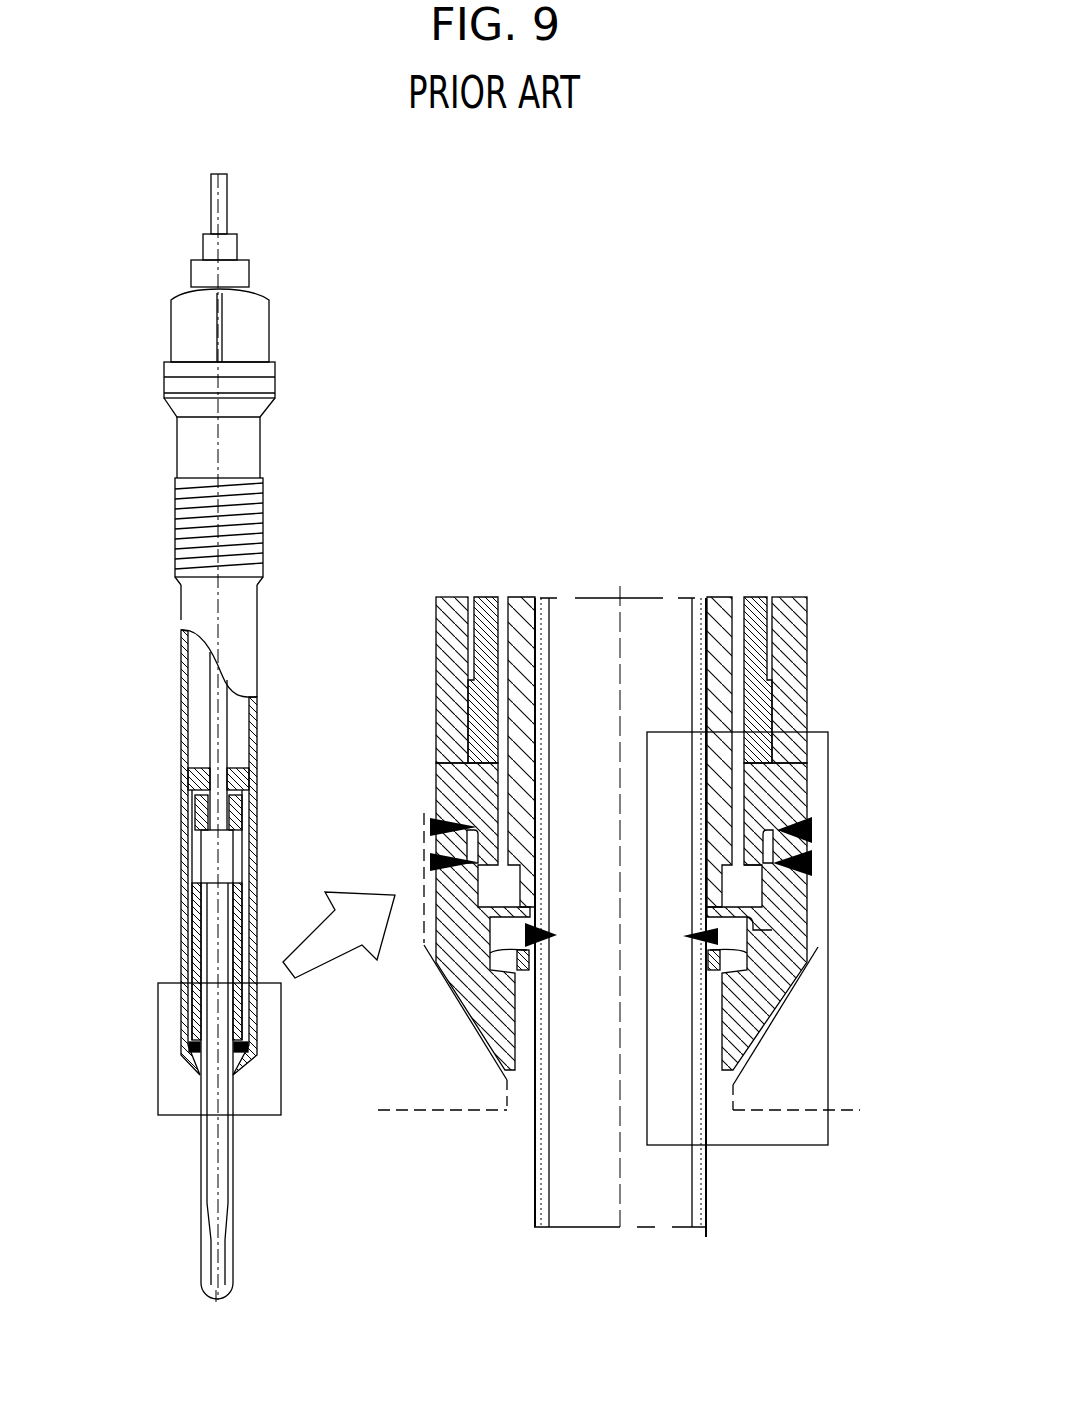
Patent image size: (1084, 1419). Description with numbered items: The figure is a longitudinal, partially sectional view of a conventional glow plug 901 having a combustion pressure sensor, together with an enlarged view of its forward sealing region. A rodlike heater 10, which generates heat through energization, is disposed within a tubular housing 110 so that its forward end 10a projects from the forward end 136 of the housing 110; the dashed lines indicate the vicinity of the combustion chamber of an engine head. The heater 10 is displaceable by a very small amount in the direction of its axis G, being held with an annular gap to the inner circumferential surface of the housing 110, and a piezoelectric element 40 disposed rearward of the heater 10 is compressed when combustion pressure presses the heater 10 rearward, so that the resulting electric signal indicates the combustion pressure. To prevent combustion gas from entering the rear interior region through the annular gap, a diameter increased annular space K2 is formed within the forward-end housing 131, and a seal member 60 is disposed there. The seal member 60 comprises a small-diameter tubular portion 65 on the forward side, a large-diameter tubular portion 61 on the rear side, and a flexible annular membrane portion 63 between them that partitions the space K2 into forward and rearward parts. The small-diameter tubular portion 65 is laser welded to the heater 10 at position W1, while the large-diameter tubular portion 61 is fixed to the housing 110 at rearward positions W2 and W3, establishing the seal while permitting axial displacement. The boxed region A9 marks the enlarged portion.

The glow plug 901 is at (165, 455).
The axis G is at (218, 440).
The housing 110 is at (180, 612).
The piezoelectric element 40 is at (247, 780).
The seal member 60 is at (178, 1030).
The forward-end housing 131 is at (182, 1045).
The forward end of the housing 136 is at (200, 1076).
The heater 10 is at (198, 1185).
The forward end of the heater 10a is at (220, 1300).
The diameter increased annular space K2 is at (500, 930).
The welding position W1 is at (683, 936).
The welding position W2 is at (773, 862).
The welding position W3 is at (777, 829).
The large-diameter tubular portion 61 is at (767, 898).
The annular membrane portion 63 is at (750, 930).
The small-diameter tubular portion 65 is at (750, 962).
The region A9 is at (828, 1043).